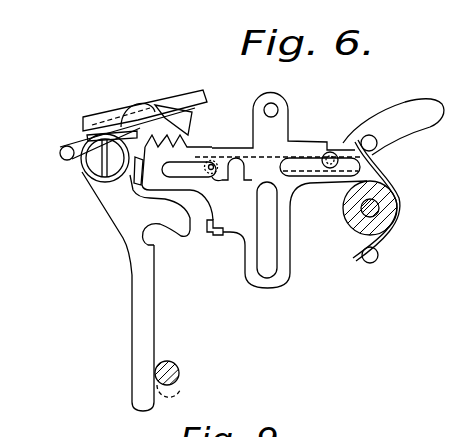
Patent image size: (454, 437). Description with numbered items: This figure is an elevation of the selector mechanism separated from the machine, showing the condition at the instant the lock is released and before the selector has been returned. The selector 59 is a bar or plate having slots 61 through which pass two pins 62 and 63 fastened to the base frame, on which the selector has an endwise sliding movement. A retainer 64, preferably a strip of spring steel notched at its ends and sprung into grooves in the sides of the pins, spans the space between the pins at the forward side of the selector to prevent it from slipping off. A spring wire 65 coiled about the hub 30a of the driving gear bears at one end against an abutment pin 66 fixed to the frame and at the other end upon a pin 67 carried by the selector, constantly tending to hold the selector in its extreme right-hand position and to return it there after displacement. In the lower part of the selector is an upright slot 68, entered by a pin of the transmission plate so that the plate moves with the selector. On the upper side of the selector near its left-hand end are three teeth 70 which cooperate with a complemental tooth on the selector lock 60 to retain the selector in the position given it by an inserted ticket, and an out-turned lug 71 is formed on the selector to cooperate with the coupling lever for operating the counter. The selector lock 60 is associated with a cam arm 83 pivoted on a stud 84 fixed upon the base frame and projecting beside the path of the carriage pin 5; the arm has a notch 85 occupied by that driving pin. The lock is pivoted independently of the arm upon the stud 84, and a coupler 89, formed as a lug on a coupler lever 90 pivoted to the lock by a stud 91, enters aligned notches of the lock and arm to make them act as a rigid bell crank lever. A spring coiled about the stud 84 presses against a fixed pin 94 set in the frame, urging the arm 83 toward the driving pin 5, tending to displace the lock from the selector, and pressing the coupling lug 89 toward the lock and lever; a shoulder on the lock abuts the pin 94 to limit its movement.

The carriage pin 5 is at (174, 364).
The hub of the driving gear 30a is at (385, 223).
The selector 59 is at (347, 140).
The selector lock 60 is at (190, 123).
The slots 61 is at (237, 177).
The pin 62 is at (212, 160).
The pin 63 is at (331, 152).
The retainer 64 is at (270, 153).
The spring wire 65 is at (383, 173).
The abutment pin 66 is at (371, 263).
The pin 67 is at (373, 136).
The upright slot 68 is at (268, 252).
The teeth 70 is at (180, 140).
The out-turned lug 71 is at (138, 182).
The cam arm 83 is at (140, 287).
The stud 84 is at (100, 155).
The notch 85 is at (158, 230).
The coupler 89 is at (87, 125).
The coupler lever 90 is at (178, 97).
The stud 91 is at (133, 103).
The fixed pin 94 is at (62, 150).